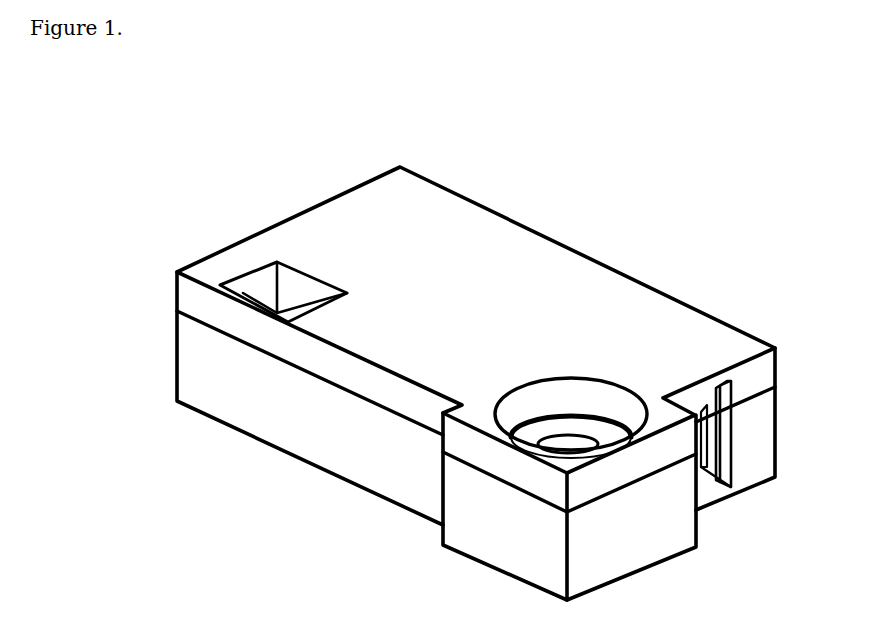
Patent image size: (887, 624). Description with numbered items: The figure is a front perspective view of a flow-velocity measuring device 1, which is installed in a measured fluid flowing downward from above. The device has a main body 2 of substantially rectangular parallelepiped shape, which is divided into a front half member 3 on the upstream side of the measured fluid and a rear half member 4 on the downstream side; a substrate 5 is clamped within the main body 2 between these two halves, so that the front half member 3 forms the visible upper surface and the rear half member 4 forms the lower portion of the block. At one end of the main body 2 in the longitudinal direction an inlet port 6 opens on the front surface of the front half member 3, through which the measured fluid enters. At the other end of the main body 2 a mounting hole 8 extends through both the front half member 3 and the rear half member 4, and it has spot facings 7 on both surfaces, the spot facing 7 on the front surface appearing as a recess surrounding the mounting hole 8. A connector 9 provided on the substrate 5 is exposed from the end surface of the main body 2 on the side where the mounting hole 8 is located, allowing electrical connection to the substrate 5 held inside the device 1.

The flow-velocity measuring device 1 is at (455, 345).
The main body 2 is at (168, 340).
The front half member 3 is at (485, 248).
The rear half member 4 is at (297, 423).
The substrate 5 is at (732, 440).
The inlet port 6 is at (247, 277).
The spot facings 7 is at (527, 383).
The mounting hole 8 is at (588, 437).
The connector 9 is at (731, 487).